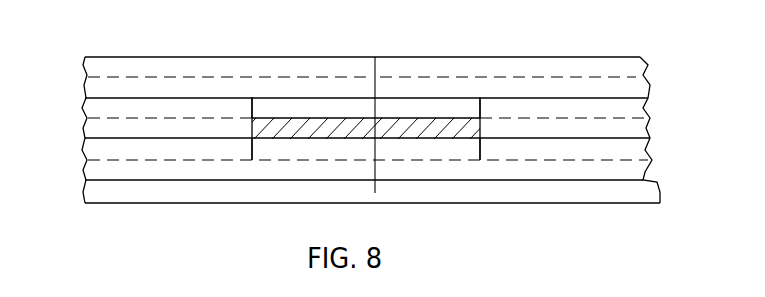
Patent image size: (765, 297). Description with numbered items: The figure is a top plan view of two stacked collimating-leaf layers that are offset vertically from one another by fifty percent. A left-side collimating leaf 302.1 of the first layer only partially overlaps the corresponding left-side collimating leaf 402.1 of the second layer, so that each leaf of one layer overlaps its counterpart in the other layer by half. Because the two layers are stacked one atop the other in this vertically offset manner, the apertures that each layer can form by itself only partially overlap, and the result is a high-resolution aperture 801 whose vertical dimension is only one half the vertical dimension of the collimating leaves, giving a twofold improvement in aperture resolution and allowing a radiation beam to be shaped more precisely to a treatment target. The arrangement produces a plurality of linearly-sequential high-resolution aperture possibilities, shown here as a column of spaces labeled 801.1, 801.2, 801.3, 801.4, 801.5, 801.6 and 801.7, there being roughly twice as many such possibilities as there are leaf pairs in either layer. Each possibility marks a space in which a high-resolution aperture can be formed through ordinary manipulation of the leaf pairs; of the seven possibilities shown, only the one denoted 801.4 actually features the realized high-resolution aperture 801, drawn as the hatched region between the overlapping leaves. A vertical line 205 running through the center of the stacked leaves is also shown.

The left-side collimating leaf 302.1 is at (290, 60).
The left-side collimating leaf 402.1 is at (160, 92).
The high-resolution aperture 801 is at (388, 125).
The linearly-sequential high-resolution aperture possibility 801.1 is at (418, 68).
The linearly-sequential high-resolution aperture possibility 801.2 is at (420, 90).
The linearly-sequential high-resolution aperture possibility 801.3 is at (423, 110).
The linearly-sequential high-resolution aperture possibility 801.4 is at (408, 132).
The linearly-sequential high-resolution aperture possibility 801.5 is at (450, 148).
The linearly-sequential high-resolution aperture possibility 801.6 is at (472, 170).
The linearly-sequential high-resolution aperture possibility 801.7 is at (350, 193).
The center line 205 is at (357, 146).